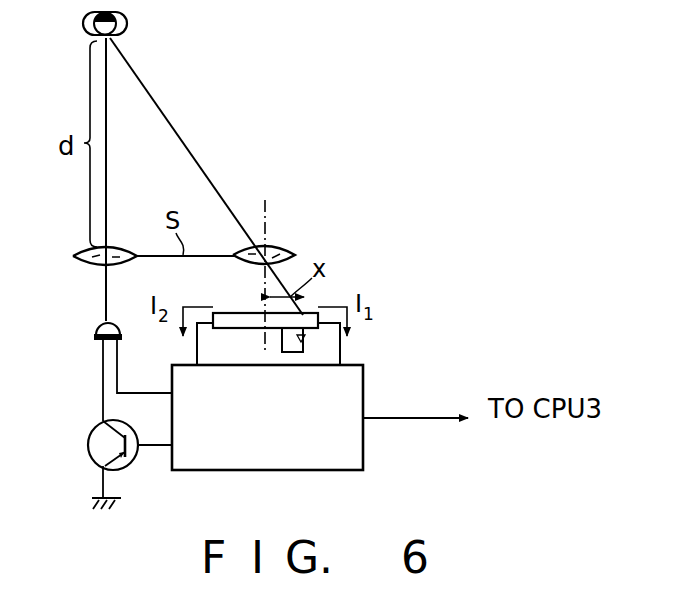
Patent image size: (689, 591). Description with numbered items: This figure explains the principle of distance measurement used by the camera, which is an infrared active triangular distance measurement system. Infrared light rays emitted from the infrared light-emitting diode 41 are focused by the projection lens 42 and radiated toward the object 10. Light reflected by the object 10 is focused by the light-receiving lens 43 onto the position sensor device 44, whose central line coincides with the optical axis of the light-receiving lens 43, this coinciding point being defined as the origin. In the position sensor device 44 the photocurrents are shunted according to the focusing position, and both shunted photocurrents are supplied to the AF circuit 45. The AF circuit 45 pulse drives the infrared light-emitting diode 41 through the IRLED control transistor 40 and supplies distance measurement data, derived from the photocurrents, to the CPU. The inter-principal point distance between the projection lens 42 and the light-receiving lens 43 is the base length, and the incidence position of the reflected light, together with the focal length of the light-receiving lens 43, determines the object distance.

The object 10 is at (127, 24).
The IRLED control transistor 40 is at (84, 453).
The infrared light-emitting diode 41 is at (92, 331).
The projection lens 42 is at (76, 261).
The light-receiving lens 43 is at (294, 251).
The position sensor device 44 is at (231, 313).
The AF circuit 45 is at (361, 450).